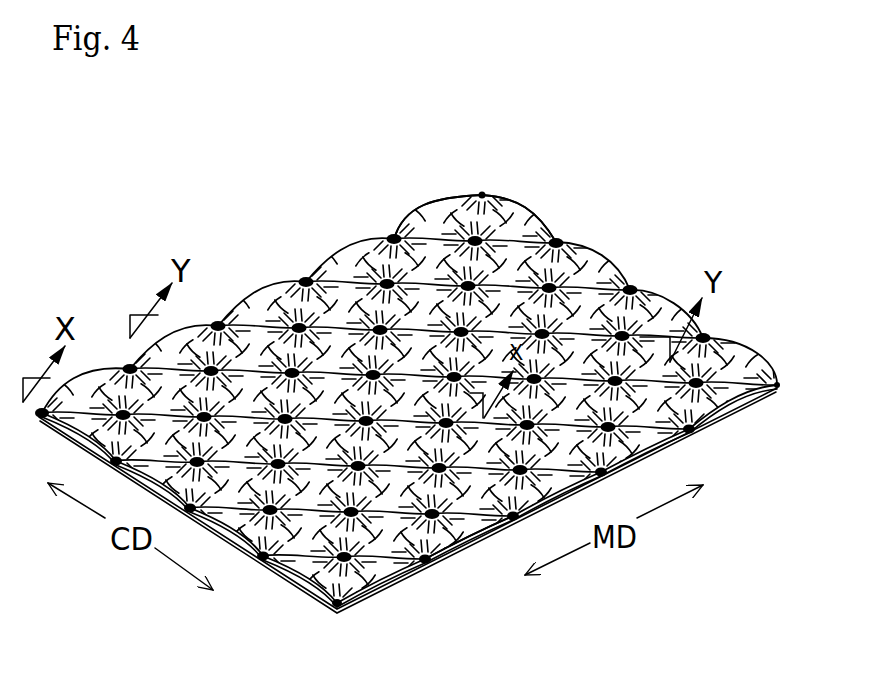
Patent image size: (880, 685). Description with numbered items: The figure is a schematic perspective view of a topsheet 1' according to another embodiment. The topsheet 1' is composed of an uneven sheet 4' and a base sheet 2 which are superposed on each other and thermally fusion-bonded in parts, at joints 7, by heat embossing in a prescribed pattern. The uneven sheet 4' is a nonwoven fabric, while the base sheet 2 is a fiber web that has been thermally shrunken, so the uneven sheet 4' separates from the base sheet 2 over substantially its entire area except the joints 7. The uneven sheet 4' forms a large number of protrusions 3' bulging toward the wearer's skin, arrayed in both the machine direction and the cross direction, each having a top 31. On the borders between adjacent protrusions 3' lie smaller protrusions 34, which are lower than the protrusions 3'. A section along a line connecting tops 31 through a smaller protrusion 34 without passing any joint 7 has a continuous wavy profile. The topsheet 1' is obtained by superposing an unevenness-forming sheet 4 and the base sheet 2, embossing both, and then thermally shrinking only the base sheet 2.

The topsheet 1' is at (409, 363).
The base sheet 2 is at (388, 595).
The protrusions 3' is at (475, 379).
The unevenness-forming sheet 4 is at (189, 528).
The uneven sheet 4' is at (557, 507).
The joints 7 is at (588, 275).
The top 31 is at (333, 385).
The smaller protrusions 34 is at (205, 387).